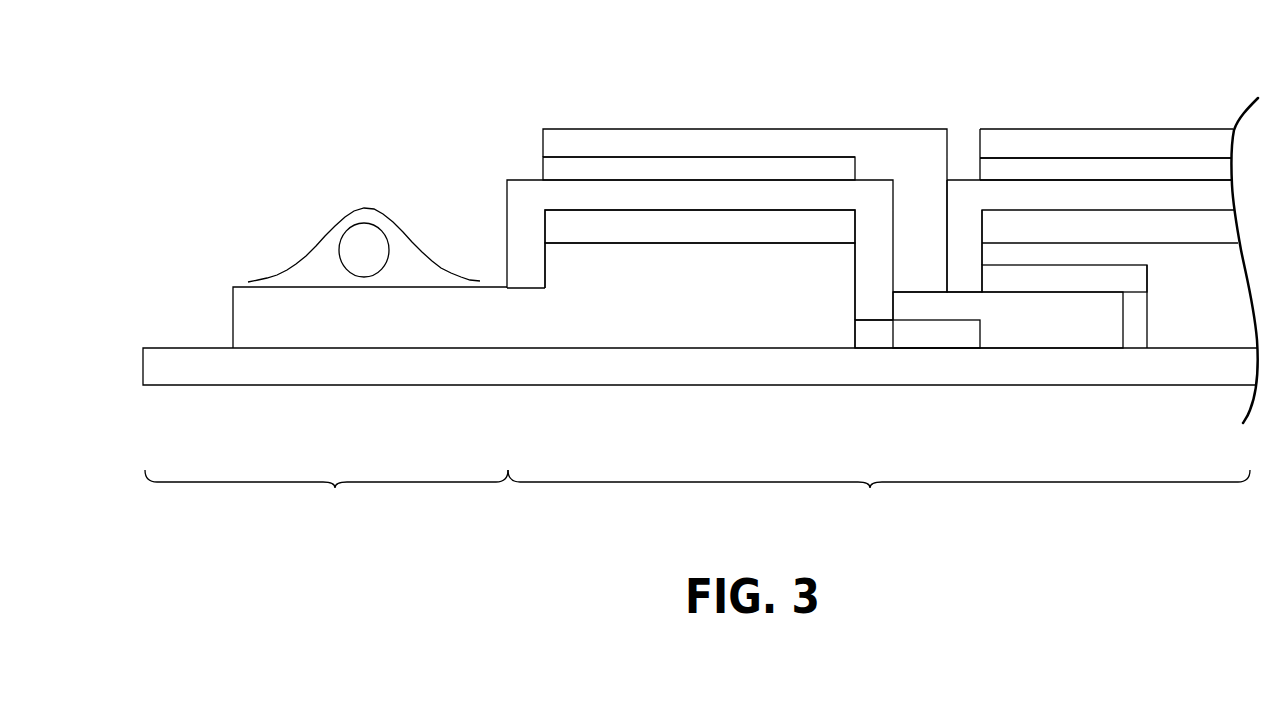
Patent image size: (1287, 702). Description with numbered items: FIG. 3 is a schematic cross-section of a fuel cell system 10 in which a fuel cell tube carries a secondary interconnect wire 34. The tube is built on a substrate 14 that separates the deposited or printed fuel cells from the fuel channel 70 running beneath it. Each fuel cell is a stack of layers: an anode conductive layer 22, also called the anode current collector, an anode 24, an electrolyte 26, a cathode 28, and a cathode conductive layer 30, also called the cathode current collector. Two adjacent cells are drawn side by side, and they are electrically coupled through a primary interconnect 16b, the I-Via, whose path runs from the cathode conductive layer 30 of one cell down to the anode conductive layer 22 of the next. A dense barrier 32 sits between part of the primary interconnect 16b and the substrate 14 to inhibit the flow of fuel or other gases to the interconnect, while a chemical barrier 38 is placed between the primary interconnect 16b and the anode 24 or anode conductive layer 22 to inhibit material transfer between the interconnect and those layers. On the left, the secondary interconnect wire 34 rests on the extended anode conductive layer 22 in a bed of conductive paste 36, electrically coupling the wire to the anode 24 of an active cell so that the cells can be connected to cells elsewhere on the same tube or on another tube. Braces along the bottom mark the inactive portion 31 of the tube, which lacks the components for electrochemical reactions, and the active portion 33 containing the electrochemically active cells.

The fuel cell system 10 is at (700, 258).
The substrate 14 is at (745, 377).
The primary interconnect 16b is at (1053, 335).
The anode conductive layer 22 is at (1205, 314).
The anode 24 is at (1171, 235).
The electrolyte 26 is at (1155, 205).
The cathode 28 is at (1150, 179).
The cathode conductive layer 30 is at (1138, 150).
The inactive portion 31 is at (326, 492).
The dense barrier 32 is at (968, 342).
The active portion 33 is at (879, 492).
The secondary interconnect wire 34 is at (374, 238).
The conductive paste 36 is at (316, 247).
The chemical barrier 38 is at (1098, 287).
The fuel channel 70 is at (726, 412).